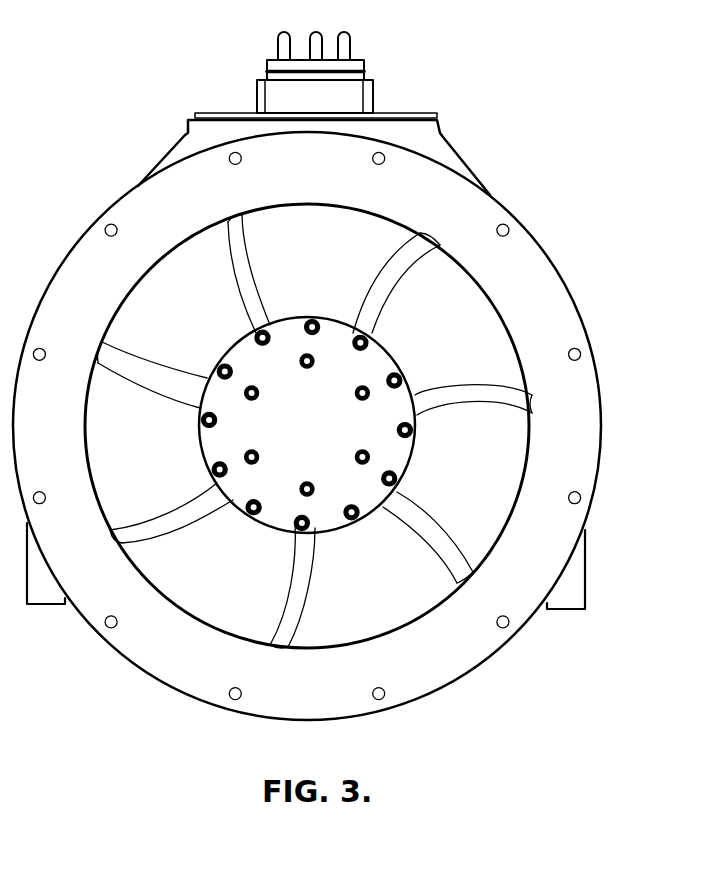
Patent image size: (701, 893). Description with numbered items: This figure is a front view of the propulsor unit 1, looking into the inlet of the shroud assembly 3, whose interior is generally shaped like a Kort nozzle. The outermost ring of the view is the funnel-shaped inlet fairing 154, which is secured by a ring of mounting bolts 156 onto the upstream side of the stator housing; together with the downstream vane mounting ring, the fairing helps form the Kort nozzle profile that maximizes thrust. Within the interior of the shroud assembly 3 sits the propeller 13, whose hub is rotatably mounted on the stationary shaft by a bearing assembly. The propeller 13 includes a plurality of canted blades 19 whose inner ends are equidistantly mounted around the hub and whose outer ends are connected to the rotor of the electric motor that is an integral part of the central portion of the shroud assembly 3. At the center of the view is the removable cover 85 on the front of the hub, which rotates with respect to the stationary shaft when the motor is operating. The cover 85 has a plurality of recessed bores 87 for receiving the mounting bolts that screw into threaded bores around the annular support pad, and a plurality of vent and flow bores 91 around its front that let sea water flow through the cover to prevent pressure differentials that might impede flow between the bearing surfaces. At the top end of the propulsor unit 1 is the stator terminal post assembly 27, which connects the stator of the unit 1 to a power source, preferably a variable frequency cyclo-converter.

The propulsor unit 1 is at (163, 130).
The shroud assembly 3 is at (97, 216).
The propeller 13 is at (228, 292).
The canted blades 19 is at (430, 518).
The stator terminal post assembly 27 is at (353, 100).
The removable cover 85 is at (337, 465).
The recessed bores 87 is at (268, 330).
The vent and flow bores 91 is at (303, 368).
The inlet fairing 154 is at (555, 292).
The mounting bolts 156 is at (505, 226).